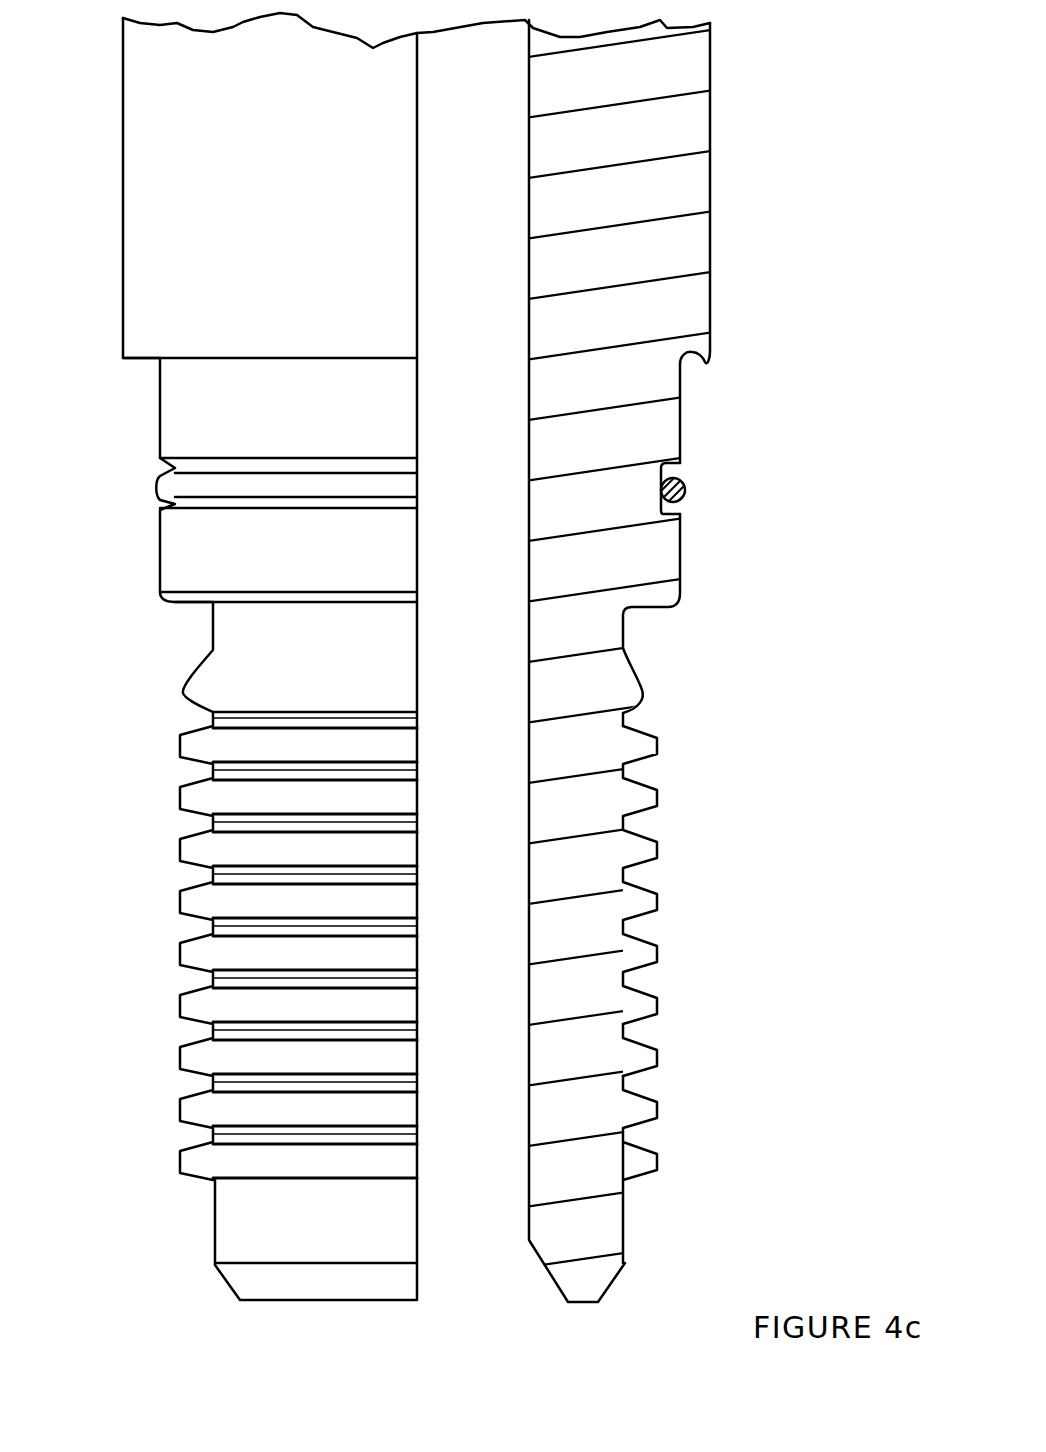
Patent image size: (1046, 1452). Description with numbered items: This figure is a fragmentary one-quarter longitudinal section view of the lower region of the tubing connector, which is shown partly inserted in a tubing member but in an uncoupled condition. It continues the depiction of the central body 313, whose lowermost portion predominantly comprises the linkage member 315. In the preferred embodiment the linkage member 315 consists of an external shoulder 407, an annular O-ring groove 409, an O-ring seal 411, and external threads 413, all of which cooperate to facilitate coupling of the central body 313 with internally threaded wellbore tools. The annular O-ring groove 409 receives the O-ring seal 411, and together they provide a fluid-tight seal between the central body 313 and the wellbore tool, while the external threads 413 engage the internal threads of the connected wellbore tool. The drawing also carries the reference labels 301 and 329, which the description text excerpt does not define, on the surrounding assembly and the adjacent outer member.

The connector assembly 301 is at (477, 657).
The central body 313 is at (691, 661).
The linkage member 315 is at (734, 953).
The outer member 329 is at (150, 692).
The external shoulder 407 is at (710, 385).
The annular O-ring groove 409 is at (677, 478).
The O-ring seal 411 is at (687, 493).
The external threads 413 is at (656, 1003).